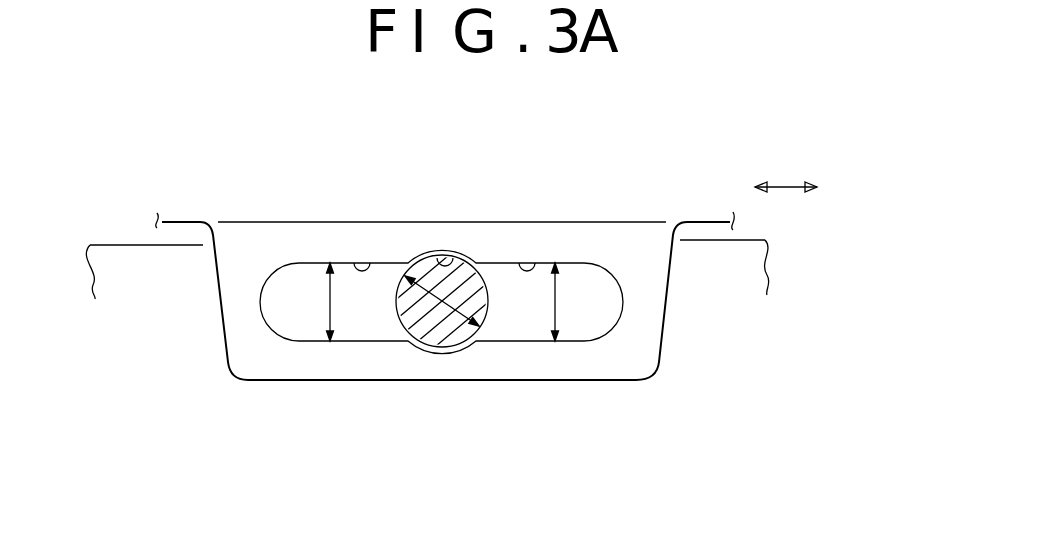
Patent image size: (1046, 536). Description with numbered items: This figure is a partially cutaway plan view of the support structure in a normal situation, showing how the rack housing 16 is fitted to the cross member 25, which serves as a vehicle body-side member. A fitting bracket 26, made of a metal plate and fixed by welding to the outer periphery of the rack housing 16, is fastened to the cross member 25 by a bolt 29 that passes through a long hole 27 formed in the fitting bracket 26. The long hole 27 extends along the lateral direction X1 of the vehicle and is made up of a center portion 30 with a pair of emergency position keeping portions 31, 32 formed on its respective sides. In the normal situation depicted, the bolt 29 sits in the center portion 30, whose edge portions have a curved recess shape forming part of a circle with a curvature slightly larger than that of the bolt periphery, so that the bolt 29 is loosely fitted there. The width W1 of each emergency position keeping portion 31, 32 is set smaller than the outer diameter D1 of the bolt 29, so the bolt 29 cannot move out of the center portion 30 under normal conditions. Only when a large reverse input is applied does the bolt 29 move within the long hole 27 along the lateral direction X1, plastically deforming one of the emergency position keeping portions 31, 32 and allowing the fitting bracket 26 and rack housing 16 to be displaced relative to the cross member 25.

The rack housing 16 is at (715, 224).
The cross member 25 is at (120, 242).
The fitting bracket 26 is at (666, 356).
The long hole 27 is at (513, 322).
The bolt 29 is at (458, 330).
The center portion 30 is at (463, 257).
The emergency position keeping portion 31 is at (353, 262).
The emergency position keeping portion 32 is at (535, 262).
The width W1 is at (327, 305).
The outer diameter D1 is at (442, 304).
The lateral direction X1 is at (787, 185).